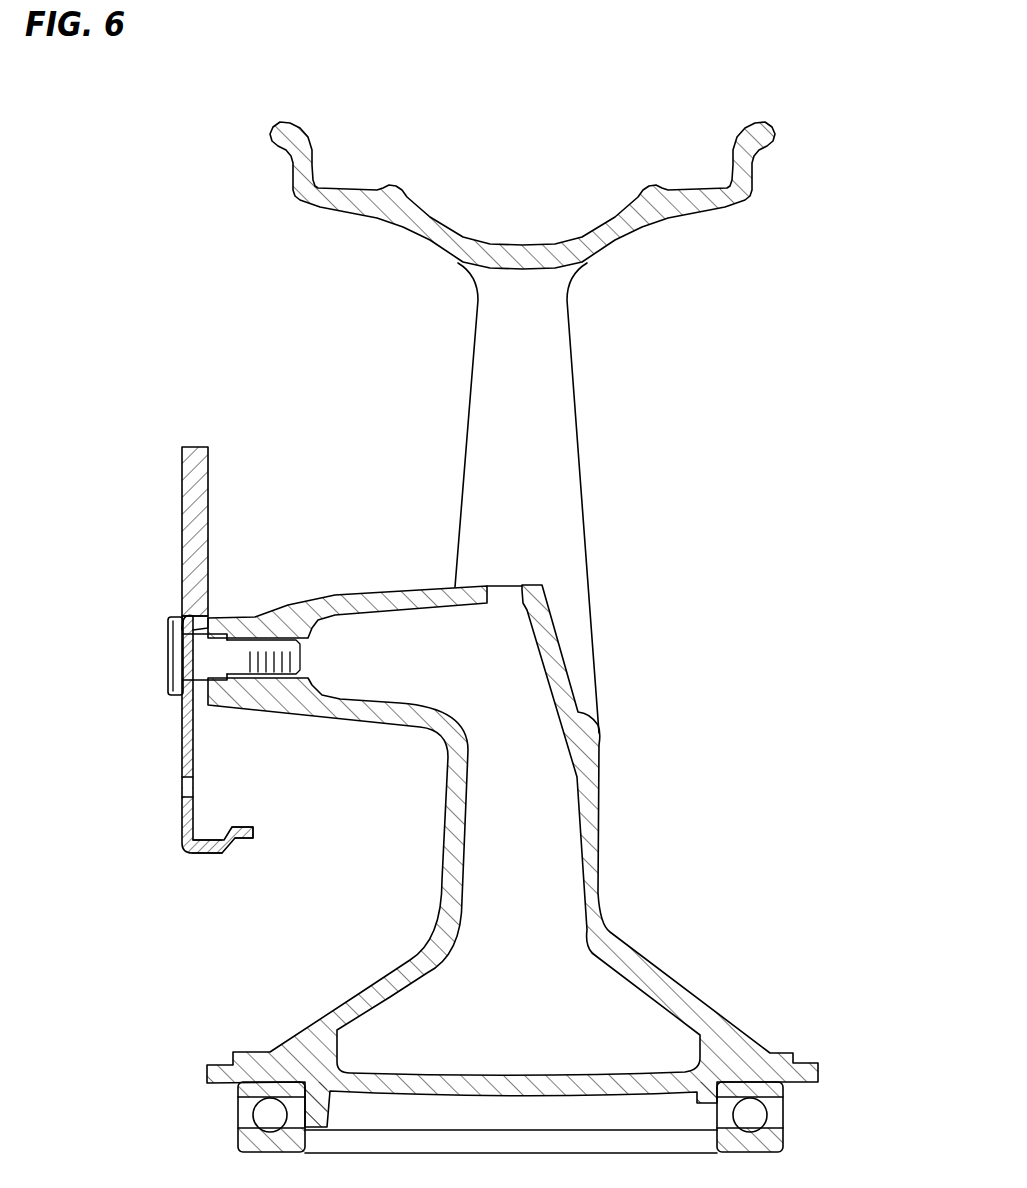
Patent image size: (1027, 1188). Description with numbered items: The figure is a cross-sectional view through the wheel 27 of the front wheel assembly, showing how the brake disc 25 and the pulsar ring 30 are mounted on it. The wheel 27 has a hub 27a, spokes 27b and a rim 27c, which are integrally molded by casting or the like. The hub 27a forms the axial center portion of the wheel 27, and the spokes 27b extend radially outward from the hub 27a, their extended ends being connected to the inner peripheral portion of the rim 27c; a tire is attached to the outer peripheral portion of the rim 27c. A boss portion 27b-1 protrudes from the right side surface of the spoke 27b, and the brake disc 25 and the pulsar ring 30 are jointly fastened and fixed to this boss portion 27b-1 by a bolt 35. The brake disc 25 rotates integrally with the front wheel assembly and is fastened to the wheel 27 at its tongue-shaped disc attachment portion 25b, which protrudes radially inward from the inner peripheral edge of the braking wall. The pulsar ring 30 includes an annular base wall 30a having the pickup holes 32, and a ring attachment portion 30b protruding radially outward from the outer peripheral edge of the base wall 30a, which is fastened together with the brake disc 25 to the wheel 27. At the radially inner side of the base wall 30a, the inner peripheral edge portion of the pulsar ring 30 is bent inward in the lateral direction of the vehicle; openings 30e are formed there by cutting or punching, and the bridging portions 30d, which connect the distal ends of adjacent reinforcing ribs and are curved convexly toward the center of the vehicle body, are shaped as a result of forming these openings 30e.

The brake disc 25 is at (179, 462).
The disc attachment portion 25b is at (208, 622).
The wheel 27 is at (689, 94).
The hub 27a is at (727, 1047).
The spoke 27b is at (588, 787).
The boss portion 27b-1 is at (390, 585).
The rim 27c is at (345, 195).
The pulsar ring 30 is at (171, 765).
The base wall 30a is at (183, 731).
The ring attachment portion 30b is at (183, 625).
The bridging portion 30d is at (245, 840).
The opening 30e is at (222, 850).
The pickup hole 32 is at (188, 782).
The bolt 35 is at (166, 662).